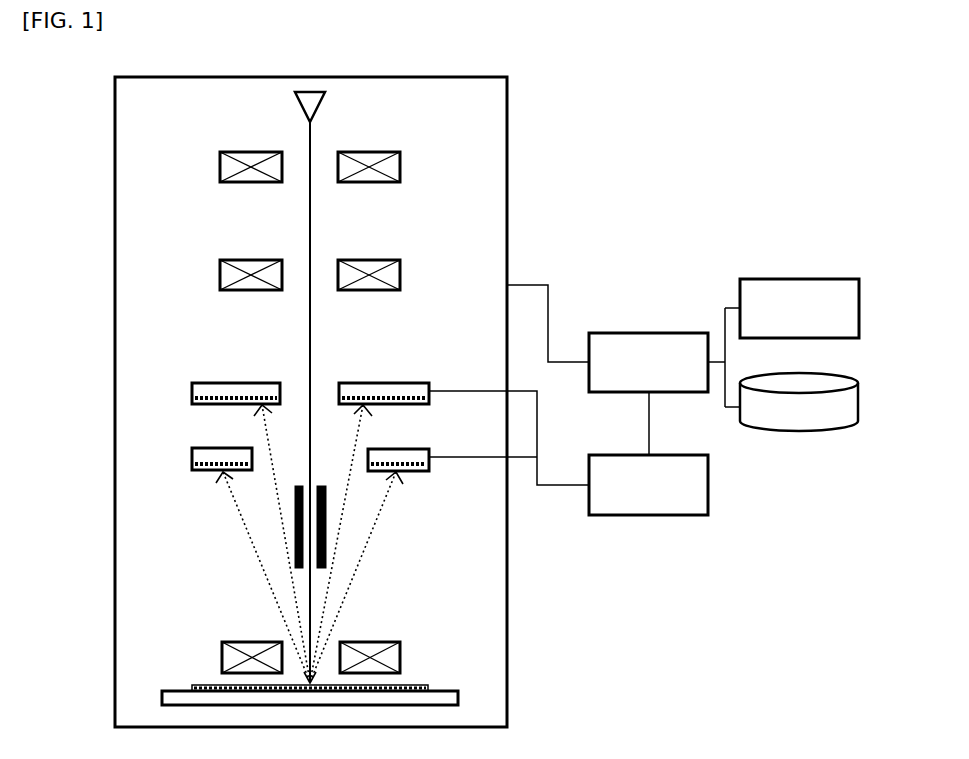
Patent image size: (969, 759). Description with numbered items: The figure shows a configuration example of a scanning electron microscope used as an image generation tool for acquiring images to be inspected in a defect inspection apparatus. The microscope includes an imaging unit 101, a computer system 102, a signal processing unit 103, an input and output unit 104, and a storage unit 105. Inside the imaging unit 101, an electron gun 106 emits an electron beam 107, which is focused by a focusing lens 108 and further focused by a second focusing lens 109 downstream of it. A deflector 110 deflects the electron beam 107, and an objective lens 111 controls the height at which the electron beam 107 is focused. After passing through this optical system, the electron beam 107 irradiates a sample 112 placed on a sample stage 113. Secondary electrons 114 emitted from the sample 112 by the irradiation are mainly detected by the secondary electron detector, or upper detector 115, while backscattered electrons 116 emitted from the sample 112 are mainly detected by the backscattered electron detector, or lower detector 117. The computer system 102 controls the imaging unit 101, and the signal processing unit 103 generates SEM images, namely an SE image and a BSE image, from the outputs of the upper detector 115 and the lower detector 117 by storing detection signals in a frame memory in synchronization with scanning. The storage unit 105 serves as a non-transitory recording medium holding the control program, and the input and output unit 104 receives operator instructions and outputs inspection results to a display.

The imaging unit 101 is at (506, 125).
The computer system 102 is at (634, 333).
The signal processing unit 103 is at (708, 492).
The input and output unit 104 is at (782, 279).
The storage unit 105 is at (813, 375).
The electron gun 106 is at (322, 100).
The electron beam 107 is at (309, 150).
The focusing lens 108 is at (222, 163).
The focusing lens 109 is at (224, 271).
The deflector 110 is at (322, 486).
The objective lens 111 is at (222, 650).
The sample 112 is at (198, 685).
The sample stage 113 is at (440, 687).
The secondary electrons 114 is at (267, 447).
The secondary electron detector (upper detector) 115 is at (403, 382).
The backscattered electrons 116 is at (380, 517).
The backscattered electron detector (lower detector) 117 is at (429, 472).